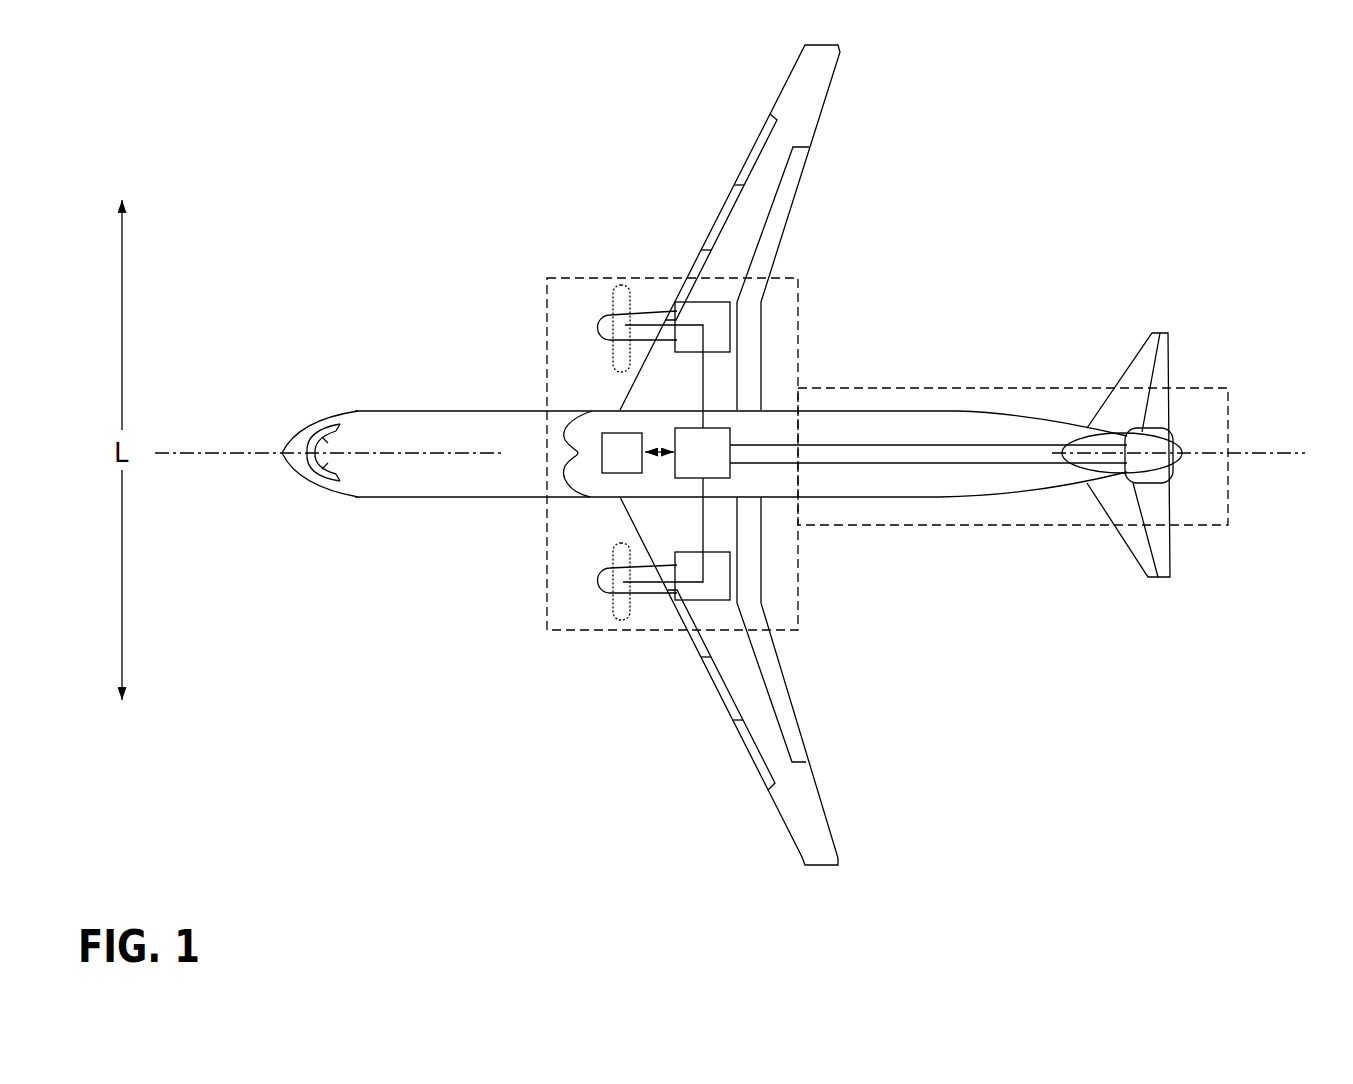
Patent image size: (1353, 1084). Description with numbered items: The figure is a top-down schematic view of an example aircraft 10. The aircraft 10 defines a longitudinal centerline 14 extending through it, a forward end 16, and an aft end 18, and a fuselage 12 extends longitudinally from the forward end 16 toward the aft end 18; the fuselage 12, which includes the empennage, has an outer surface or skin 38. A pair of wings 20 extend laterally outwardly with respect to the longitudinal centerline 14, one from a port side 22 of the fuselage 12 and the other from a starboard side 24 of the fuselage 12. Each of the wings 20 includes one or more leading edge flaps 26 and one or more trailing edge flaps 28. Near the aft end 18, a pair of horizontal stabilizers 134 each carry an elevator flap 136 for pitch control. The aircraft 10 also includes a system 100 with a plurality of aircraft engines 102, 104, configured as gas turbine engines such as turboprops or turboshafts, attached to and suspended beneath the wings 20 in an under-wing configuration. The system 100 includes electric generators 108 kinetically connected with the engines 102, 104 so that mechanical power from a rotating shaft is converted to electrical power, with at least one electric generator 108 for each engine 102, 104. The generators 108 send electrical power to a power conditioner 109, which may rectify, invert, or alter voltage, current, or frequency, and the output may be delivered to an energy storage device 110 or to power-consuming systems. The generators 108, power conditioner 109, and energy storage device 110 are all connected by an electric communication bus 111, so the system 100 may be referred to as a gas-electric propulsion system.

The aircraft 10 is at (967, 160).
The fuselage 12 is at (357, 480).
The longitudinal centerline 14 is at (218, 456).
The forward end 16 is at (275, 497).
The aft end 18 is at (1118, 565).
The wings 20 is at (808, 97).
The port side 22 is at (470, 516).
The starboard side 24 is at (358, 409).
The leading edge flaps 26 is at (720, 695).
The trailing edge flaps 28 is at (792, 708).
The outer surface or skin 38 is at (917, 458).
The system 100 is at (978, 388).
The engine 102 is at (607, 590).
The engine 104 is at (613, 308).
The electric generators 108 is at (730, 328).
The power conditioner 109 is at (730, 437).
The energy storage device 110 is at (602, 447).
The electric communication bus 111 is at (783, 478).
The horizontal stabilizers 134 is at (1135, 360).
The elevator flap 136 is at (1160, 375).